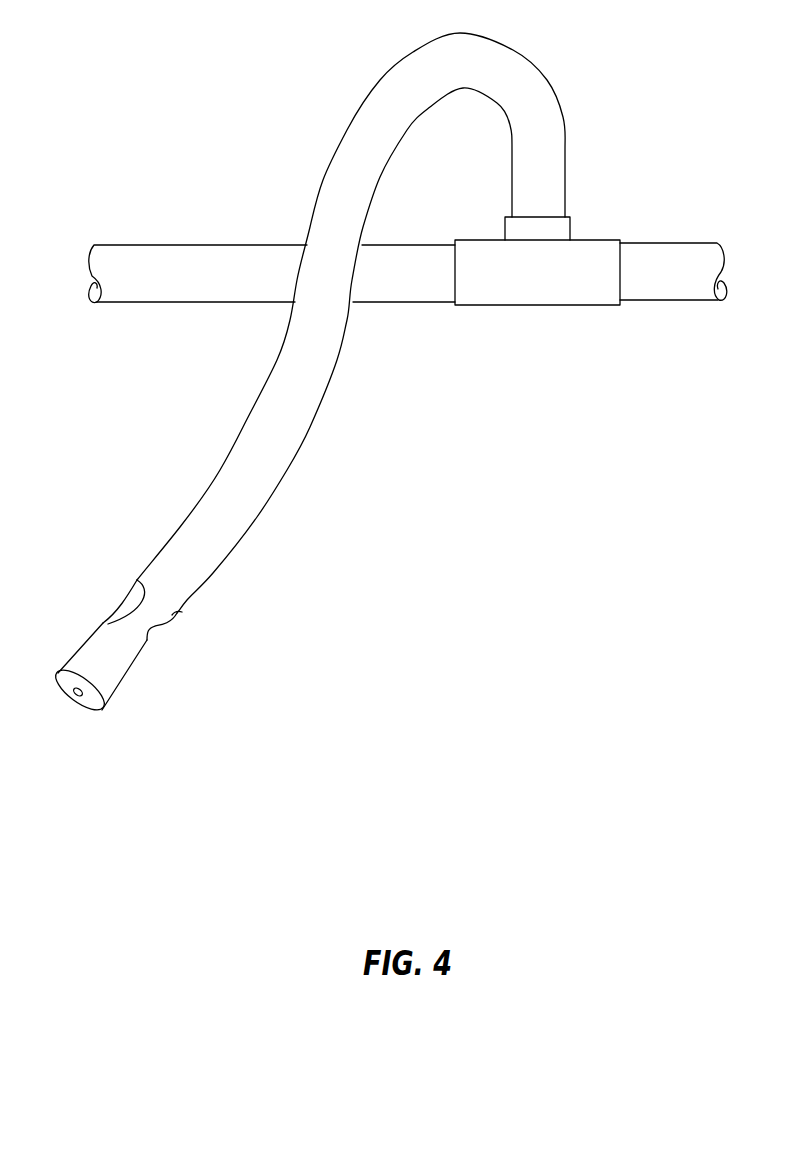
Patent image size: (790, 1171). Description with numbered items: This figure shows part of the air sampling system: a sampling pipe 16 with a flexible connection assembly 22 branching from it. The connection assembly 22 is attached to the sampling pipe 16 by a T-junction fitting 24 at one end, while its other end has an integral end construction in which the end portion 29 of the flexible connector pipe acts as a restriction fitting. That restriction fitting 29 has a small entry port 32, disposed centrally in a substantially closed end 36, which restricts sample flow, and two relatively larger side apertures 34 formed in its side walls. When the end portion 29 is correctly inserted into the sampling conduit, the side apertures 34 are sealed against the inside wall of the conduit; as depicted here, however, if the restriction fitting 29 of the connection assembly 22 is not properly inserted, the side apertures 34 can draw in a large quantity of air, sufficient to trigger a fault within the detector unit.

The sampling pipe 16 is at (211, 254).
The connection assembly 22 is at (250, 509).
The T-junction fitting 24 is at (539, 295).
The end portion 29 is at (192, 614).
The small entry port 32 is at (77, 694).
The side apertures 34 is at (112, 603).
The substantially closed end 36 is at (95, 708).